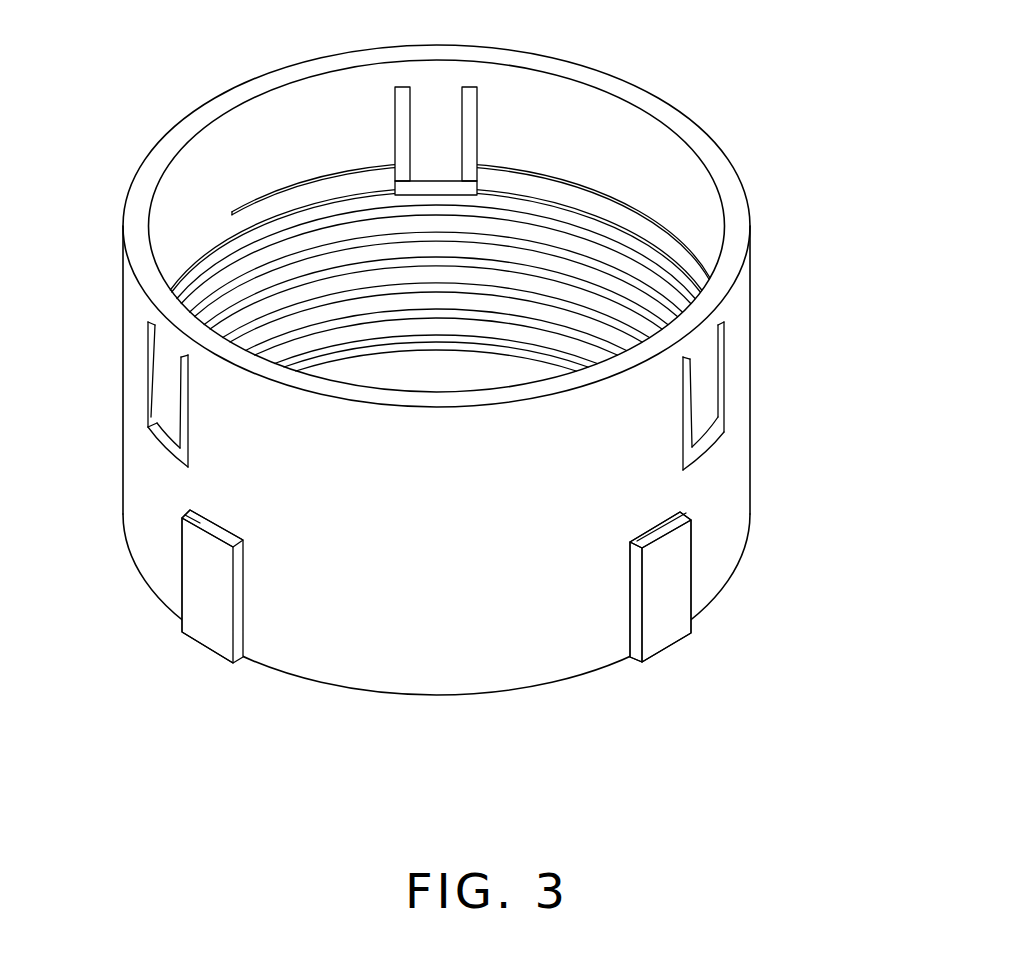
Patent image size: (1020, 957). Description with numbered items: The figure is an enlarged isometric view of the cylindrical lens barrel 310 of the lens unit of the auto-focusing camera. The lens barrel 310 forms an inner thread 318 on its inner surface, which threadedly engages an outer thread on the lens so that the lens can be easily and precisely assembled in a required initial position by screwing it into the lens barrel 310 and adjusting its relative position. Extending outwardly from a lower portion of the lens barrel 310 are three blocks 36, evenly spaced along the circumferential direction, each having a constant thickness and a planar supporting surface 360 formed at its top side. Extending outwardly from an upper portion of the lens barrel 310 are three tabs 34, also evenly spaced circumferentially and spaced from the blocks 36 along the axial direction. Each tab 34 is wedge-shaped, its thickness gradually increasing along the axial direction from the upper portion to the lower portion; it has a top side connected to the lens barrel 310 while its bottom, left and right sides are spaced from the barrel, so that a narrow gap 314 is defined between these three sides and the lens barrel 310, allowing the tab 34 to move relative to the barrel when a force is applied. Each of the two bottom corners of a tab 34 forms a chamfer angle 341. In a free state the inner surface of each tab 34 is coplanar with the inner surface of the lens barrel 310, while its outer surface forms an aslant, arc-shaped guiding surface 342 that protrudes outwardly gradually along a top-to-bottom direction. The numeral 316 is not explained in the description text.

The lens barrel 310 is at (443, 370).
The side wall 316 is at (148, 486).
The inner thread 318 is at (542, 210).
The guiding surface 342 is at (160, 412).
The tab 34 is at (776, 431).
The chamfer angle 341 is at (687, 445).
The narrow gap 314 is at (685, 457).
The planar supporting surface 360 is at (182, 513).
The block 36 is at (667, 618).